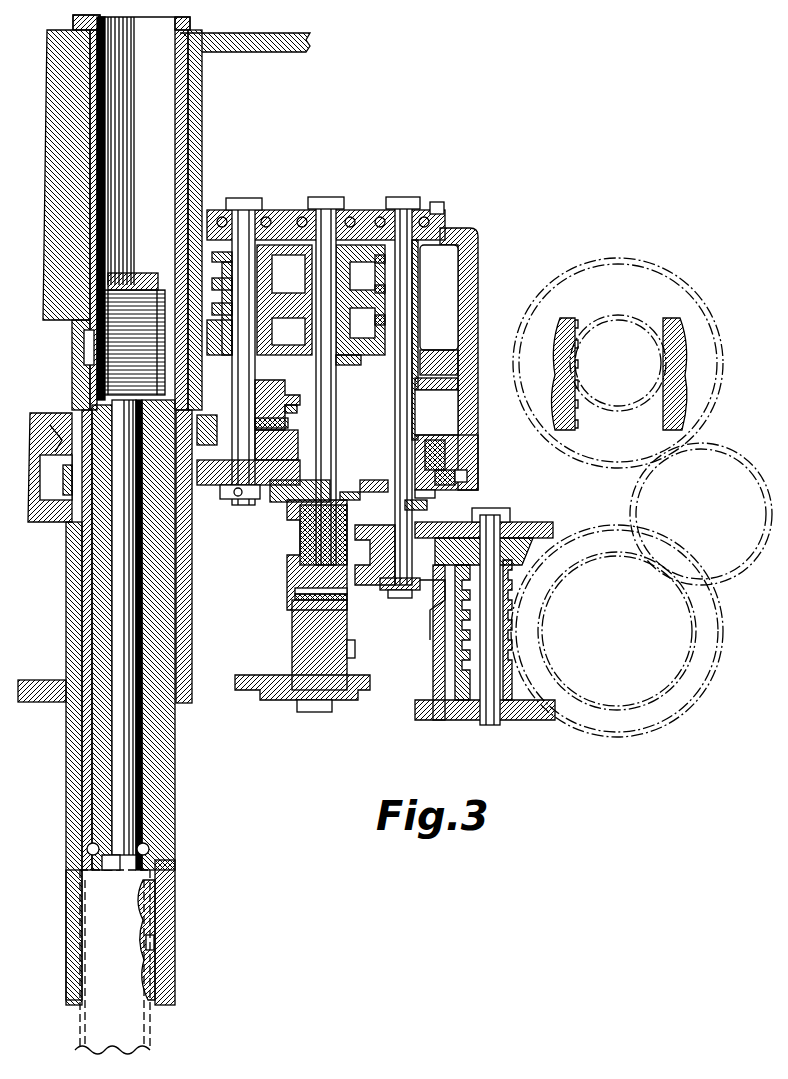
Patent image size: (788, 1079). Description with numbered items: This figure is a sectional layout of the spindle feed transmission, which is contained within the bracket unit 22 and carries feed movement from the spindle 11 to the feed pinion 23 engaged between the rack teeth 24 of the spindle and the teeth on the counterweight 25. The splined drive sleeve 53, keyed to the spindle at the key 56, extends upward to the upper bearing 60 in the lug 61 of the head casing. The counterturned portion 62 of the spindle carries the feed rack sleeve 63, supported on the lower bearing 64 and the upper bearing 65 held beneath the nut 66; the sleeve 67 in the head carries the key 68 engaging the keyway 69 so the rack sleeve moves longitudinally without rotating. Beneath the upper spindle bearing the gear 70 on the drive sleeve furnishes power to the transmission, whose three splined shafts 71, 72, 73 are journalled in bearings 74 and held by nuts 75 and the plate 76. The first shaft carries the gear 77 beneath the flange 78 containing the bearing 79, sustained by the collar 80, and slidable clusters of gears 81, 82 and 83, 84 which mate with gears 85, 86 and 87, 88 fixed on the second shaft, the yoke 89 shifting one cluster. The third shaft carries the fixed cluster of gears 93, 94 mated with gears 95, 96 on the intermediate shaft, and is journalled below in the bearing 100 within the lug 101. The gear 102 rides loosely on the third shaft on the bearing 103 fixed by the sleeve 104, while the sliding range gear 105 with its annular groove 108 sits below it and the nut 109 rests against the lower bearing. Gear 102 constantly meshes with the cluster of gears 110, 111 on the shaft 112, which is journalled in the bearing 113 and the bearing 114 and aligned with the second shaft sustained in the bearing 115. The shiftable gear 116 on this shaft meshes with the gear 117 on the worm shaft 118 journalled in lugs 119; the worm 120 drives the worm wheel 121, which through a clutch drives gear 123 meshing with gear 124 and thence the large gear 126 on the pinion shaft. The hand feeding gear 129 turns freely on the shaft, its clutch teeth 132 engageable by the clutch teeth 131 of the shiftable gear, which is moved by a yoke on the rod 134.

The spindle 11 is at (170, 887).
The bracket unit 22 is at (470, 238).
The feed pinion 23 is at (626, 315).
The rack teeth 24 is at (572, 320).
The counterweight 25 is at (684, 338).
The drive sleeve 53 is at (168, 929).
The key 56 is at (158, 952).
The upper bearing 60 is at (48, 413).
The lug 61 is at (30, 424).
The counterturned portion 62 is at (124, 660).
The feed rack sleeve 63 is at (97, 609).
The lower bearing 64 is at (172, 828).
The upper bearing 65 is at (172, 270).
The nut 66 is at (158, 273).
The sleeve 67 is at (182, 131).
The key 68 is at (86, 344).
The keyway 69 is at (73, 578).
The gear 70 is at (62, 480).
The first shaft 71 is at (257, 276).
The second shaft 72 is at (336, 276).
The third shaft 73 is at (411, 276).
The bearings 74 is at (436, 212).
The nuts 75 is at (404, 200).
The plate 76 is at (380, 210).
The gear 77 is at (215, 490).
The flange 78 is at (208, 487).
The bearing 79 is at (268, 455).
The collar 80 is at (245, 499).
The gear 81 is at (215, 345).
The gear 82 is at (213, 308).
The gear 83 is at (213, 258).
The gear 84 is at (215, 280).
The gear 85 is at (362, 370).
The gear 86 is at (378, 330).
The gear 87 is at (378, 270).
The gear 88 is at (378, 296).
The yoke 89 is at (436, 350).
The gear 93 is at (440, 384).
The gear 94 is at (436, 425).
The gear 95 is at (285, 400).
The gear 96 is at (285, 412).
The bearing 100 is at (400, 590).
The lug 101 is at (425, 610).
The gear 102 is at (478, 473).
The bearing 103 is at (478, 453).
The sleeve 104 is at (478, 441).
The gear 105 is at (427, 505).
The annular groove 108 is at (370, 547).
The nut 109 is at (390, 598).
The gear 110 is at (377, 487).
The gear 111 is at (354, 494).
The shaft 112 is at (295, 568).
The bearing 113 is at (272, 505).
The bearing 114 is at (322, 712).
The bearing 115 is at (292, 425).
The shiftable gear 116 is at (290, 535).
The gear 117 is at (530, 522).
The worm shaft 118 is at (500, 622).
The lugs 119 is at (440, 715).
The worm 120 is at (512, 642).
The worm wheel 121 is at (560, 725).
The gear 123 is at (685, 662).
The gear 124 is at (765, 538).
The large gear 126 is at (428, 492).
The hand feeding gear 129 is at (355, 648).
The clutch teeth 131 is at (290, 590).
The clutch teeth 132 is at (290, 599).
The rod 134 is at (280, 660).